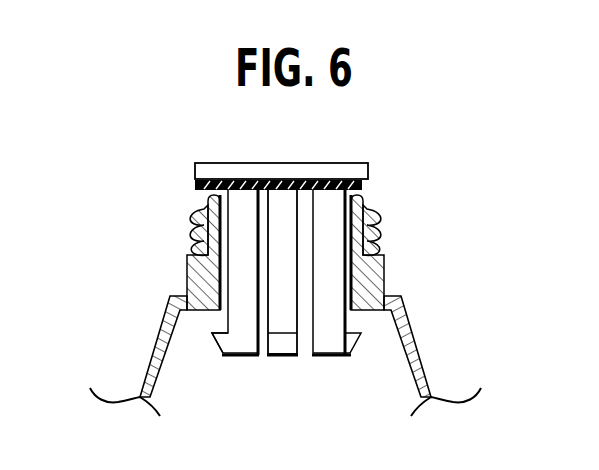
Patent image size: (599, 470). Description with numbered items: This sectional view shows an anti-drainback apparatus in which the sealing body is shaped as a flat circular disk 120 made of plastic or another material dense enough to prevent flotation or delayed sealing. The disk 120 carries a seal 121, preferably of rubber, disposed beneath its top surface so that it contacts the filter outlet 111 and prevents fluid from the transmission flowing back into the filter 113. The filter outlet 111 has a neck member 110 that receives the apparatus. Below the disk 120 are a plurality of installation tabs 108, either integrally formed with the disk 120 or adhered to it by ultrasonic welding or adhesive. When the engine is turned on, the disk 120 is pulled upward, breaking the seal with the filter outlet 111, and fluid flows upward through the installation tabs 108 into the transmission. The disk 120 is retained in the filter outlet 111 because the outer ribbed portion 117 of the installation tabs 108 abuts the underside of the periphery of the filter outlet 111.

The flat circular disk 120 is at (356, 163).
The seal 121 is at (195, 183).
The filter outlet 111 is at (360, 197).
The neck member 110 is at (383, 285).
The filter 113 is at (430, 347).
The outer ribbed portion 117 is at (216, 360).
The installation tabs 108 is at (198, 333).